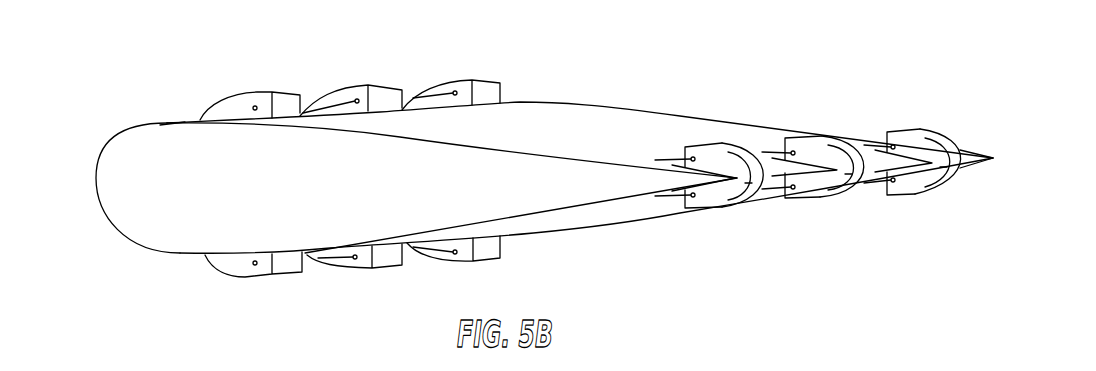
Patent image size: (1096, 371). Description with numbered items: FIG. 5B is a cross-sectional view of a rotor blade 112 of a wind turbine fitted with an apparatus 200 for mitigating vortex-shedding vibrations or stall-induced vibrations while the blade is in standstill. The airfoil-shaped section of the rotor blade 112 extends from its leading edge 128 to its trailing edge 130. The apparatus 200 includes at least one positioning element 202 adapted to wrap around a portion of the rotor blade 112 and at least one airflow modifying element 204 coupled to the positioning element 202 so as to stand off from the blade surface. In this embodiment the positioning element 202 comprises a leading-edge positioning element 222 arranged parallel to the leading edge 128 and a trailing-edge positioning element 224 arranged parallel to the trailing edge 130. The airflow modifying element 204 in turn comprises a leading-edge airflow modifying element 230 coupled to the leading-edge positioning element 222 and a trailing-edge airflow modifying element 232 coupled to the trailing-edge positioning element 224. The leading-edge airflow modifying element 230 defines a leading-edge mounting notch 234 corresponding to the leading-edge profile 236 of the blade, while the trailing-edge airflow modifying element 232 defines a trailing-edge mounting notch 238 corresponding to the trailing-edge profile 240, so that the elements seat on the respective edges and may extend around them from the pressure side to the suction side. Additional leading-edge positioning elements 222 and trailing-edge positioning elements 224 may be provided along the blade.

The apparatus 200 is at (539, 158).
The rotor blade 112 is at (536, 197).
The leading edge 128 is at (103, 215).
The trailing edge 130 is at (988, 156).
The leading-edge profile 236 is at (165, 112).
The leading-edge mounting notch 234 is at (232, 110).
The airflow modifying element 204 is at (582, 153).
The leading-edge airflow modifying element 230 is at (340, 85).
The positioning element 202 is at (582, 153).
The leading-edge positioning element 222 is at (365, 150).
The trailing-edge positioning element 224 is at (811, 183).
The trailing-edge airflow modifying element 232 is at (950, 177).
The trailing-edge profile 240 is at (646, 181).
The trailing-edge mounting notch 238 is at (716, 208).